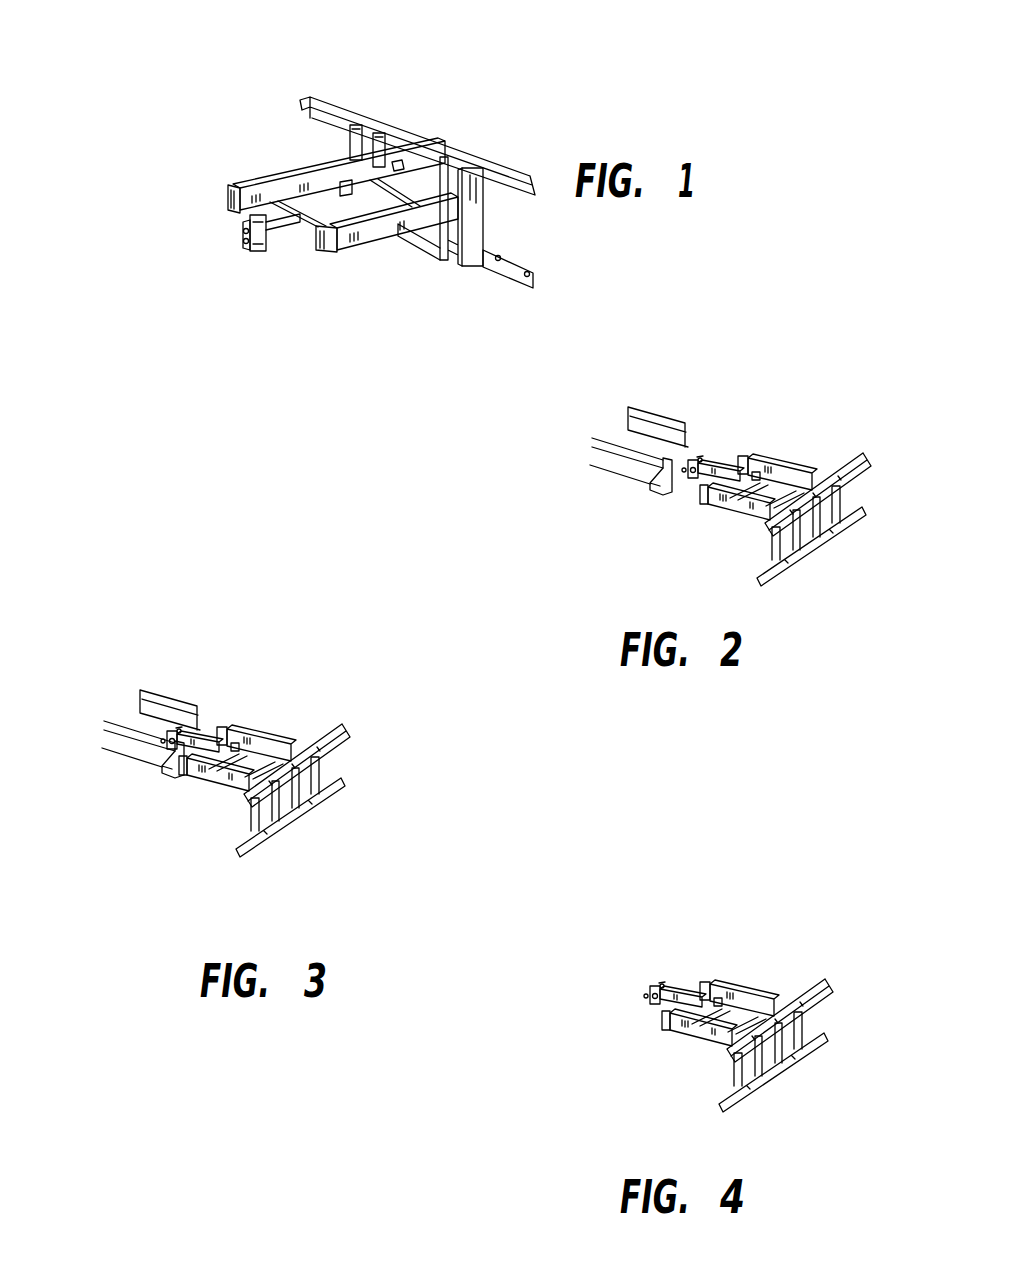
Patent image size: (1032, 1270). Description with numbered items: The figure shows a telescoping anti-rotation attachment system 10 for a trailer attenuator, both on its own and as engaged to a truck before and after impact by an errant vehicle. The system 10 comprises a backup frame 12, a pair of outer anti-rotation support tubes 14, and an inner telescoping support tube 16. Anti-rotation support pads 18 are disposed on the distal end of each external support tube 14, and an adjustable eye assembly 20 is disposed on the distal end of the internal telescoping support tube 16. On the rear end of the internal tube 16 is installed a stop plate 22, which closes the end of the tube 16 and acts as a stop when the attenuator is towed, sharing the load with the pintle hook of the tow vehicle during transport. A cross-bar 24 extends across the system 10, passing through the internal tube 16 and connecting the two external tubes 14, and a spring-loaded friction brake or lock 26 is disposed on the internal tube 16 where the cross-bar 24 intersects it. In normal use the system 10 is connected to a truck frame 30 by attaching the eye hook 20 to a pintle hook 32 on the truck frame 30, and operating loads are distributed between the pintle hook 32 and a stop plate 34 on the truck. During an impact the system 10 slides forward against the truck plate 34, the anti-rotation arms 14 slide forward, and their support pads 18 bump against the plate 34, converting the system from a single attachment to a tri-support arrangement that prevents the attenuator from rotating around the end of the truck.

In FIG. 1, the telescoping anti-rotation attachment system 10 is at (360, 272).
In FIG. 2, the telescoping anti-rotation attachment system 10 is at (795, 418).
In FIG. 3, the telescoping anti-rotation attachment system 10 is at (241, 617).
In FIG. 4, the telescoping anti-rotation attachment system 10 is at (815, 885).
In FIG. 1, the backup frame 12 is at (433, 137).
In FIG. 2, the backup frame 12 is at (800, 562).
In FIG. 3, the backup frame 12 is at (290, 845).
In FIG. 4, the backup frame 12 is at (781, 1085).
In FIG. 1, the external anti-rotation support tubes 14 is at (307, 168).
In FIG. 2, the external anti-rotation support tubes 14 is at (797, 473).
In FIG. 3, the external anti-rotation support tubes 14 is at (225, 769).
In FIG. 4, the external anti-rotation support tubes 14 is at (680, 1012).
In FIG. 1, the internal telescoping support tube 16 is at (284, 237).
In FIG. 2, the internal telescoping support tube 16 is at (707, 472).
In FIG. 3, the internal telescoping support tube 16 is at (200, 741).
In FIG. 4, the internal telescoping support tube 16 is at (601, 1020).
In FIG. 1, the anti-rotation support pads 18 is at (230, 213).
In FIG. 2, the anti-rotation support pads 18 is at (724, 480).
In FIG. 3, the anti-rotation support pads 18 is at (203, 751).
In FIG. 4, the anti-rotation support pads 18 is at (632, 981).
In FIG. 1, the adjustable eye assembly 20 is at (245, 238).
In FIG. 2, the adjustable eye assembly 20 is at (700, 472).
In FIG. 3, the adjustable eye assembly 20 is at (169, 740).
In FIG. 4, the adjustable eye assembly 20 is at (601, 987).
In FIG. 1, the stop plate 22 is at (400, 168).
In FIG. 2, the stop plate 22 is at (861, 463).
In FIG. 3, the stop plate 22 is at (316, 794).
In FIG. 4, the stop plate 22 is at (782, 1001).
In FIG. 1, the cross-bar 24 is at (400, 190).
In FIG. 2, the cross-bar 24 is at (767, 495).
In FIG. 3, the cross-bar 24 is at (246, 766).
In FIG. 4, the cross-bar 24 is at (718, 1080).
In FIG. 1, the spring-loaded friction brake or lock 26 is at (345, 190).
In FIG. 2, the spring-loaded friction brake or lock 26 is at (756, 476).
In FIG. 3, the spring-loaded friction brake or lock 26 is at (235, 747).
In FIG. 4, the spring-loaded friction brake or lock 26 is at (667, 948).
In FIG. 2, the truck frame 30 is at (607, 472).
In FIG. 3, the truck frame 30 is at (124, 779).
In FIG. 2, the pintle hook 32 is at (690, 488).
In FIG. 3, the pintle hook 32 is at (173, 759).
In FIG. 2, the stop plate on the truck 34 is at (705, 464).
In FIG. 3, the stop plate on the truck 34 is at (185, 662).
In FIG. 4, the stop plate on the truck 34 is at (662, 985).